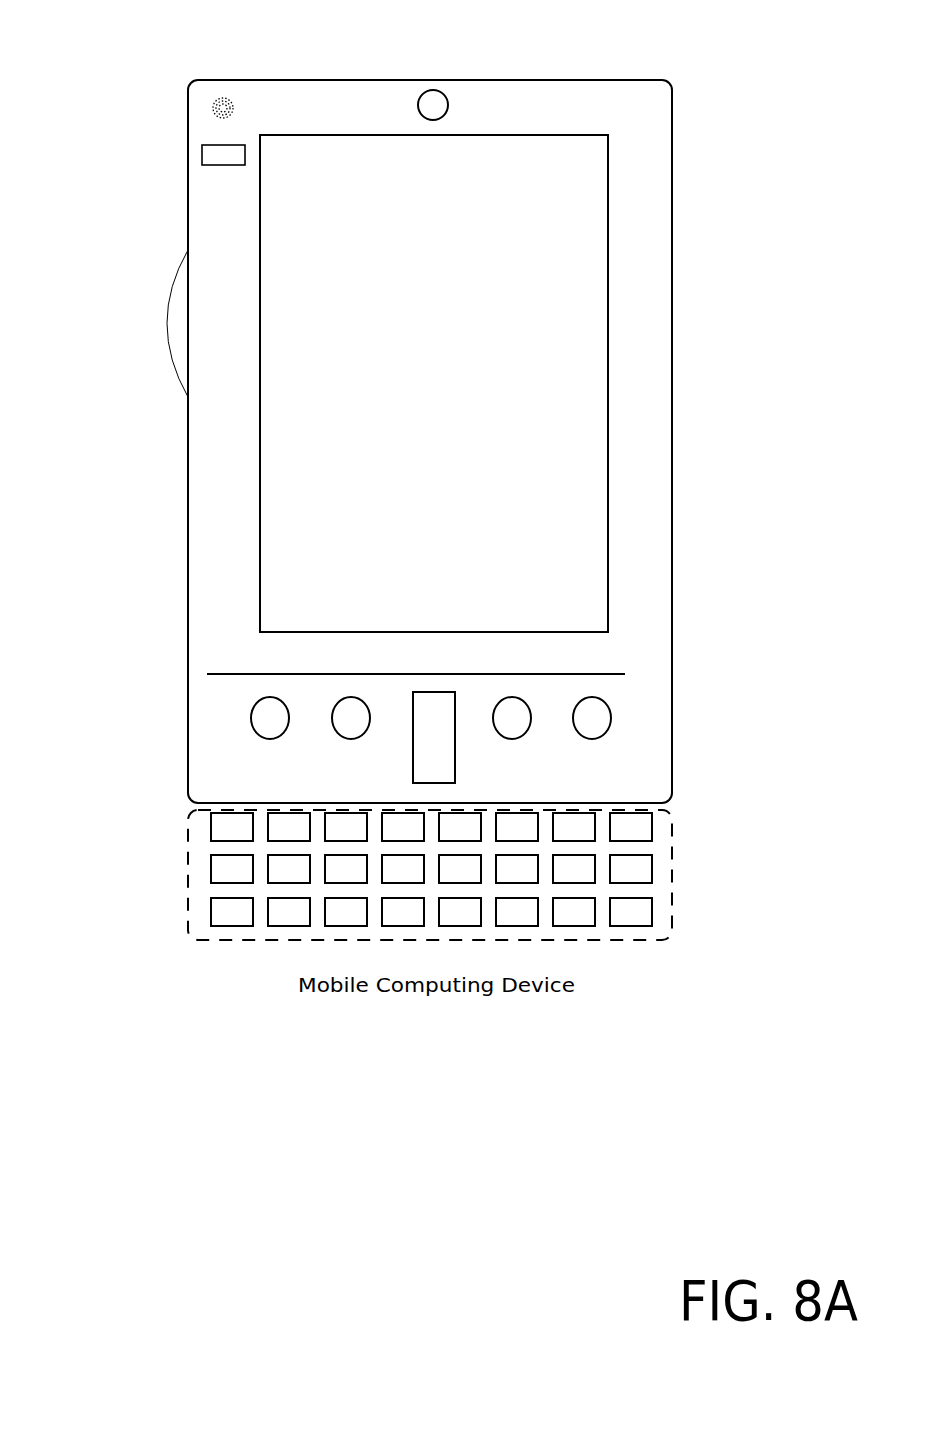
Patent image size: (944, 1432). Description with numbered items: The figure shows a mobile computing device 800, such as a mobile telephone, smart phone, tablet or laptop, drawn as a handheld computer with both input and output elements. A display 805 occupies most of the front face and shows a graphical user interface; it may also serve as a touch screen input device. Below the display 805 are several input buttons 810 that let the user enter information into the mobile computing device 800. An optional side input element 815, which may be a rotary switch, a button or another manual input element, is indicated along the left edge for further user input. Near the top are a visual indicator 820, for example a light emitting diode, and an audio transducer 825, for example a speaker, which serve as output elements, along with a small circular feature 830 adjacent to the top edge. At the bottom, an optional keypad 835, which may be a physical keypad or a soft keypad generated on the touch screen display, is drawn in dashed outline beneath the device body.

The mobile computing device 800 is at (660, 98).
The display 805 is at (368, 547).
The input buttons 810 is at (433, 744).
The side input element 815 is at (178, 323).
The visual indicator 820 is at (205, 163).
The audio transducer 825 is at (205, 107).
The camera 830 is at (446, 101).
The keypad 835 is at (197, 917).